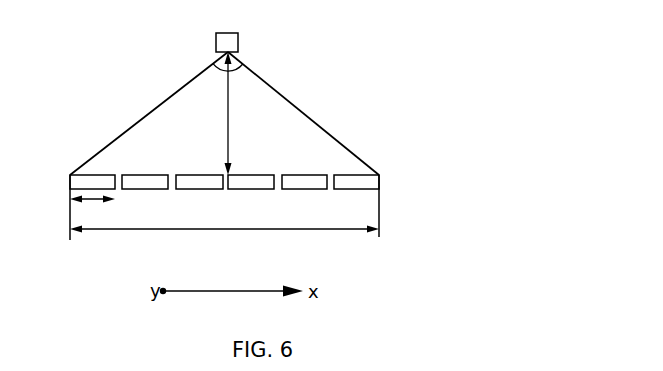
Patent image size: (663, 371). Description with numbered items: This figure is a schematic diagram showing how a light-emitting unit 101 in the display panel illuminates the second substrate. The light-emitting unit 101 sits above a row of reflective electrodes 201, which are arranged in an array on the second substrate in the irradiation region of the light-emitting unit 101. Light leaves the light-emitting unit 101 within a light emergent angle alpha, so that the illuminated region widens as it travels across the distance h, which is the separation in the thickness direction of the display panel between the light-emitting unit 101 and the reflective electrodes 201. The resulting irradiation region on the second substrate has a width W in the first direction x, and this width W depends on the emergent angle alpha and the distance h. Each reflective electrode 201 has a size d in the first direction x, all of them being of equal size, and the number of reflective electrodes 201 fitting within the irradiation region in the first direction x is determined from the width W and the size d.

The light-emitting unit 101 is at (234, 44).
The reflective electrode 201 is at (370, 184).
The light emergent angle alpha is at (212, 72).
The distance in thickness direction h is at (239, 113).
The size of the reflective electrode in the first direction d is at (92, 212).
The size of the irradiation region in the first direction W is at (224, 241).